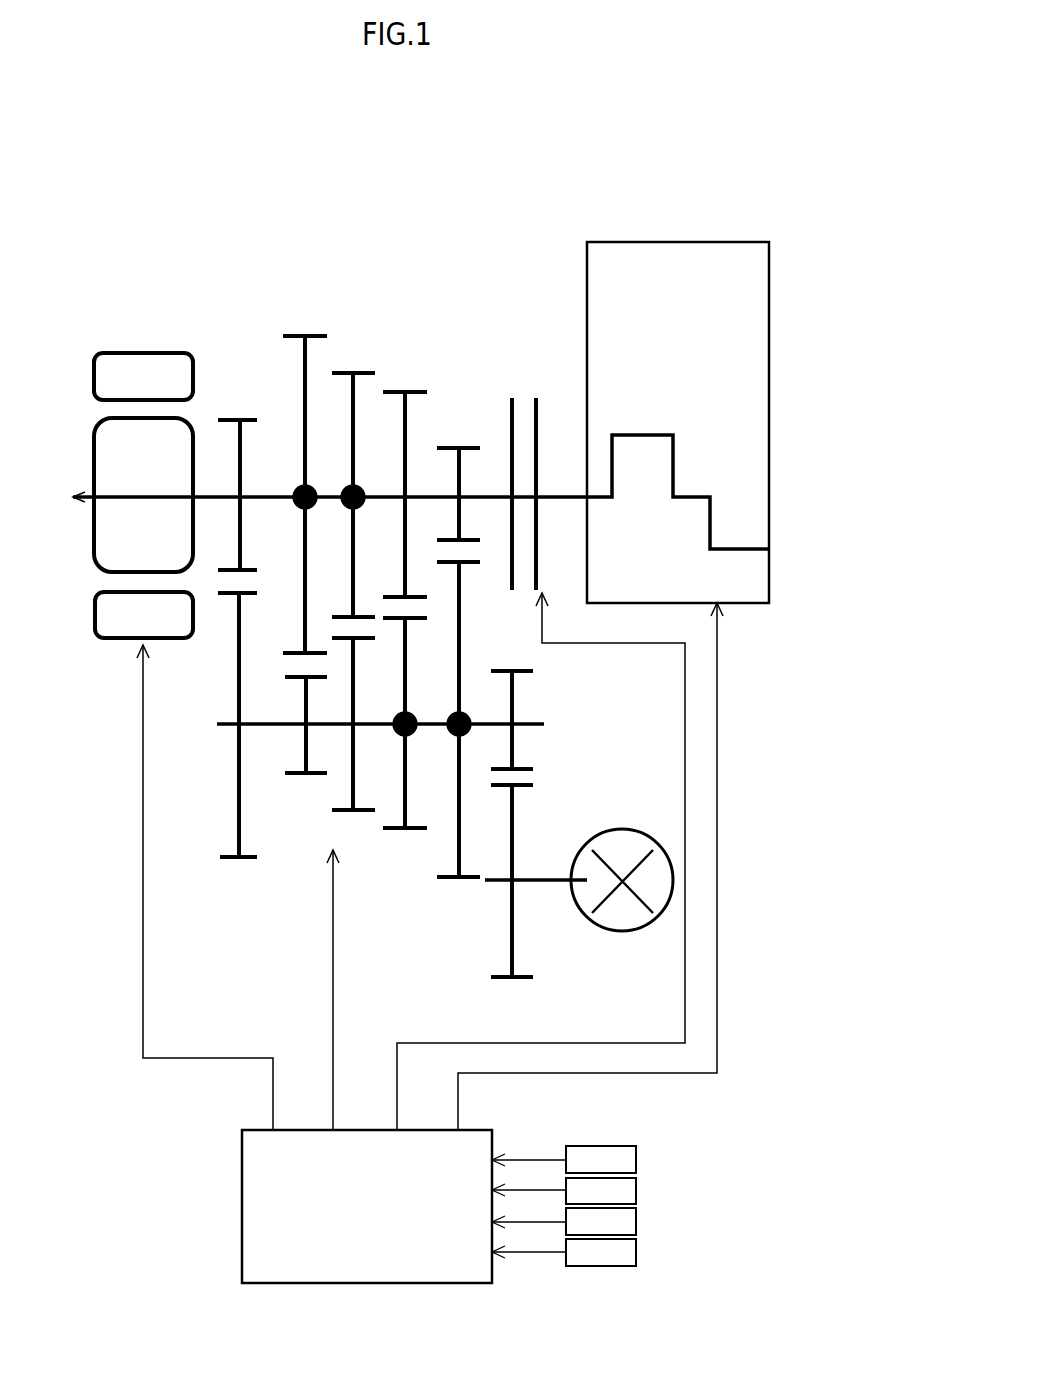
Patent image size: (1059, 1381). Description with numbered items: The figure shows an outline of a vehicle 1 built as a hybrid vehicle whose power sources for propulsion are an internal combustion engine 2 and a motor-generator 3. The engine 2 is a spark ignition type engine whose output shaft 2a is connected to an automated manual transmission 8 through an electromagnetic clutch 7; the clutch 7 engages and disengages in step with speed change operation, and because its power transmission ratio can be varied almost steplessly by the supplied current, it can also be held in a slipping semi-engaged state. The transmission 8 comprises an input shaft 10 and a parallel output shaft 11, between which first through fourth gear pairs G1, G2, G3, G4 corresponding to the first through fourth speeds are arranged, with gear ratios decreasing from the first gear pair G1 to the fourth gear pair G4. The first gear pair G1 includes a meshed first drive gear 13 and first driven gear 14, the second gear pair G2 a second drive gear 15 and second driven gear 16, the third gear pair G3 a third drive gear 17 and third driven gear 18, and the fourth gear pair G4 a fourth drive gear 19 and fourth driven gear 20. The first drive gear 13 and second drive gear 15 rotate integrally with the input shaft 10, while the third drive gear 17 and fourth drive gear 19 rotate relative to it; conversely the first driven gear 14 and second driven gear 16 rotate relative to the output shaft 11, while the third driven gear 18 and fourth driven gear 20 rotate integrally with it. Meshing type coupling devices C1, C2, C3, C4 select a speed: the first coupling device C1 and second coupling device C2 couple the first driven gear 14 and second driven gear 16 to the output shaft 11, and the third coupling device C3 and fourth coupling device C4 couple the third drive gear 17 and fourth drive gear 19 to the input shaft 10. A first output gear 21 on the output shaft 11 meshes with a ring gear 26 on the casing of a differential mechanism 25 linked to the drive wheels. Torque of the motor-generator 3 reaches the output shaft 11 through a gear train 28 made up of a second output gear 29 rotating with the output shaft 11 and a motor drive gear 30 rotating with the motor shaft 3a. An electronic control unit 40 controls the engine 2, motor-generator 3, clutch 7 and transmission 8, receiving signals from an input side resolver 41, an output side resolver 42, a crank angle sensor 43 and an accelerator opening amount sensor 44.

The vehicle 1 is at (412, 117).
The internal combustion engine 2 is at (688, 241).
The output shaft 2a is at (563, 493).
The motor-generator 3 is at (131, 352).
The shaft 3a is at (203, 495).
The electromagnetic clutch 7 is at (517, 392).
The automated manual transmission 8 is at (331, 294).
The input shaft 10 is at (497, 493).
The output shaft 11 is at (532, 720).
The first drive gear 13 is at (458, 480).
The first driven gear 14 is at (462, 608).
The second drive gear 15 is at (403, 413).
The second driven gear 16 is at (408, 642).
The third drive gear 17 is at (351, 407).
The third driven gear 18 is at (356, 656).
The fourth drive gear 19 is at (303, 368).
The fourth driven gear 20 is at (304, 707).
The first output gear 21 is at (514, 684).
The differential mechanism 25 is at (632, 828).
The ring gear 26 is at (515, 813).
The gear train 28 is at (222, 619).
The second output gear 29 is at (243, 600).
The motor drive gear 30 is at (243, 436).
The electronic control unit 40 is at (242, 1158).
The input side resolver 41 is at (637, 1158).
The output side resolver 42 is at (637, 1192).
The crank angle sensor 43 is at (637, 1222).
The accelerator opening amount sensor 44 is at (637, 1250).
The first gear pair G1 is at (458, 446).
The second gear pair G2 is at (405, 390).
The third gear pair G3 is at (353, 371).
The fourth gear pair G4 is at (298, 316).
The first coupling device C1 is at (455, 740).
The second coupling device C2 is at (398, 740).
The third coupling device C3 is at (348, 508).
The fourth coupling device C4 is at (300, 507).